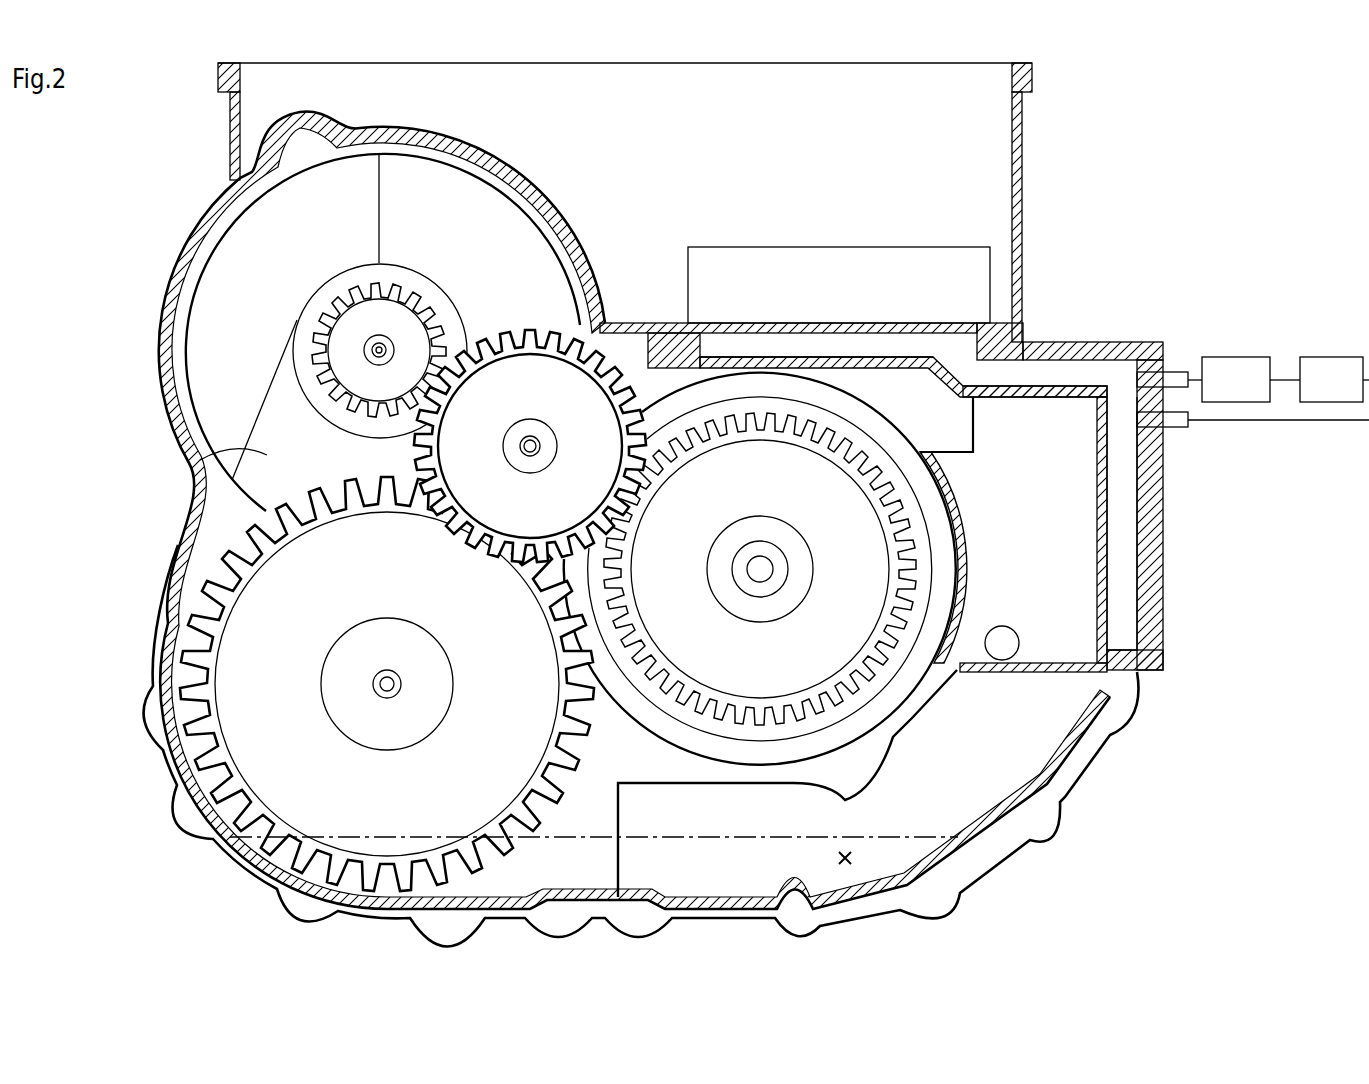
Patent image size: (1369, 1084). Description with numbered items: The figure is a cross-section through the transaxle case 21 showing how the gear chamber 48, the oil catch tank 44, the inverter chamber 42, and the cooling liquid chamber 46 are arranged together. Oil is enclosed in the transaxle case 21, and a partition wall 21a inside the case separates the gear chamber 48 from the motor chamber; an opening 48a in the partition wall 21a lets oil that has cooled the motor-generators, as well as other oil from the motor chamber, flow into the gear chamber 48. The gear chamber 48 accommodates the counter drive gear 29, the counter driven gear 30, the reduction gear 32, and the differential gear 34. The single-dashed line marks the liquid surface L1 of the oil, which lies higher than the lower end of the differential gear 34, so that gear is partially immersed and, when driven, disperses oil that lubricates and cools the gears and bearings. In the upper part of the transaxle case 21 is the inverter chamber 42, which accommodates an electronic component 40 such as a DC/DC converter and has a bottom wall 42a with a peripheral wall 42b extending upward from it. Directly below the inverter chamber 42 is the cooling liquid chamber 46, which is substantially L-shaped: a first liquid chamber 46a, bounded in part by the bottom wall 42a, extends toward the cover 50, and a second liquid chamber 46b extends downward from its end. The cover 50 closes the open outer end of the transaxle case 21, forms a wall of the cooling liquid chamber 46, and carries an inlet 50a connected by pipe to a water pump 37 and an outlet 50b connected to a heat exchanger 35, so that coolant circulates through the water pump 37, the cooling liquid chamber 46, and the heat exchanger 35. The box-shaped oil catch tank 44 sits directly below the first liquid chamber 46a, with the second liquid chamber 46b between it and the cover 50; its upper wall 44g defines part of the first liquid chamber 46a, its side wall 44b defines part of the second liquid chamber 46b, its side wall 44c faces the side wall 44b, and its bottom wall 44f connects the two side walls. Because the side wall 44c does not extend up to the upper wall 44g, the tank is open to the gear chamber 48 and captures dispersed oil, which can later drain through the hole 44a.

The transaxle case 21 is at (1113, 92).
The partition wall 21a is at (618, 822).
The counter drive gear 29 is at (822, 705).
The counter driven gear 30 is at (417, 438).
The reduction gear 32 is at (350, 316).
The differential gear 34 is at (160, 738).
The heat exchanger 35 is at (1330, 357).
The water pump 37 is at (1240, 357).
The electronic component 40 is at (928, 247).
The inverter chamber 42 is at (1022, 200).
The bottom wall 42a is at (660, 333).
The peripheral wall 42b is at (1022, 147).
The oil catch tank 44 is at (1026, 570).
The hole 44a is at (1002, 627).
The side wall 44b is at (1097, 555).
The side wall 44c is at (968, 517).
The bottom wall 44f is at (1033, 673).
The upper wall 44g is at (1037, 400).
The cooling liquid chamber 46 is at (1232, 492).
The first liquid chamber 46a is at (903, 343).
The second liquid chamber 46b is at (1120, 552).
The gear chamber 48 is at (187, 463).
The opening 48a is at (845, 870).
The cover 50 is at (1158, 605).
The inlet 50a is at (1180, 372).
The outlet 50b is at (1178, 427).
The liquid surface L1 is at (893, 837).